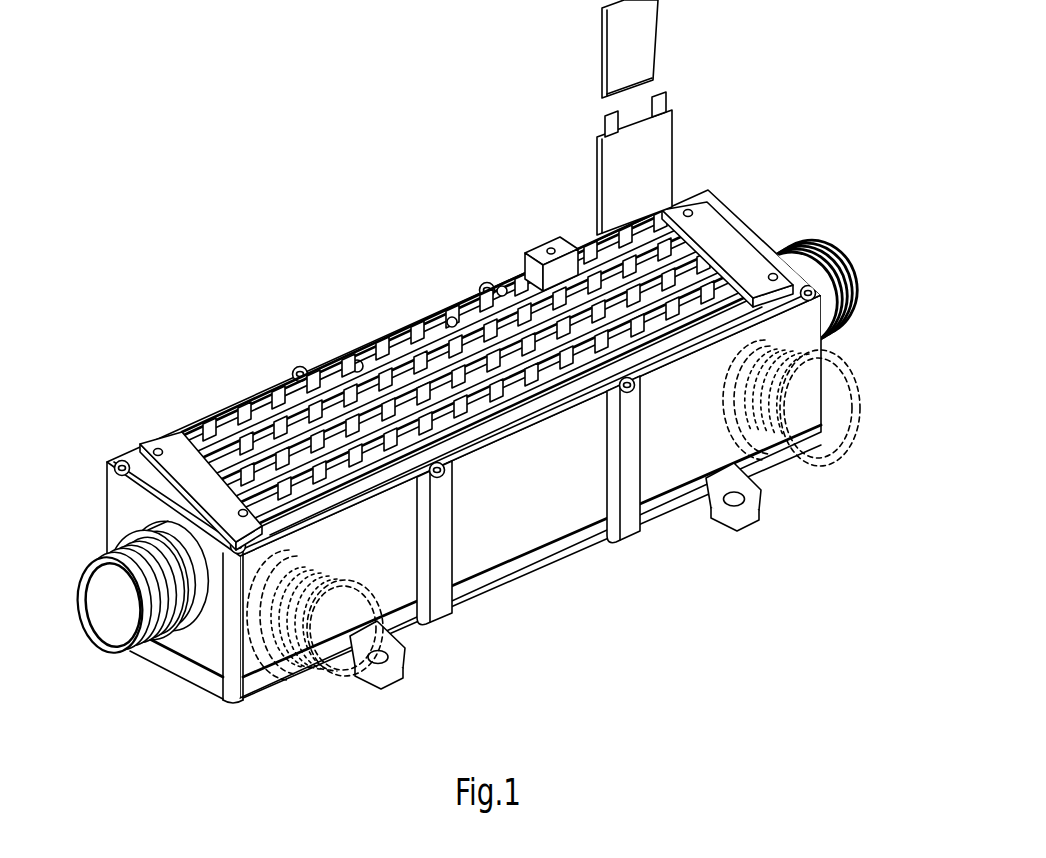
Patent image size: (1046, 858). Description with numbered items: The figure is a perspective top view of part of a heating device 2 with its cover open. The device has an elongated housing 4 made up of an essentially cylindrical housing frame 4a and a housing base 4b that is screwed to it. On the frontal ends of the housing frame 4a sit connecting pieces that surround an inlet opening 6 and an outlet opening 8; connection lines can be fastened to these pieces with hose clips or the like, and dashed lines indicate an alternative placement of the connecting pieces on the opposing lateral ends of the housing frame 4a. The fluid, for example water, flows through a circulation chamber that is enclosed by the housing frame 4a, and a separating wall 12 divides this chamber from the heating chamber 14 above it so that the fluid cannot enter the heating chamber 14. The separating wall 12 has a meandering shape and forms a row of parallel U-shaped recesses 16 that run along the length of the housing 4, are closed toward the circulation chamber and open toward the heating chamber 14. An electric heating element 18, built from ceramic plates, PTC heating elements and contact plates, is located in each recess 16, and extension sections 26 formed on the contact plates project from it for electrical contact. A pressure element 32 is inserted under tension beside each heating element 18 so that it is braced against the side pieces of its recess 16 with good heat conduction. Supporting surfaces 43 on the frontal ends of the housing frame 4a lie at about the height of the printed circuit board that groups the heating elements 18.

The heating device 2 is at (469, 366).
The elongated housing 4 is at (464, 446).
The housing frame 4a is at (543, 527).
The housing base 4b is at (480, 587).
The inlet opening 6 is at (830, 233).
The outlet opening 8 is at (105, 662).
The separating wall 12 is at (481, 358).
The heating chamber 14 is at (260, 397).
The recesses 16 is at (432, 355).
The heating element 18 is at (684, 134).
The extension sections 26 is at (500, 288).
The pressure element 32 is at (657, 33).
The supporting surfaces 43 is at (147, 450).